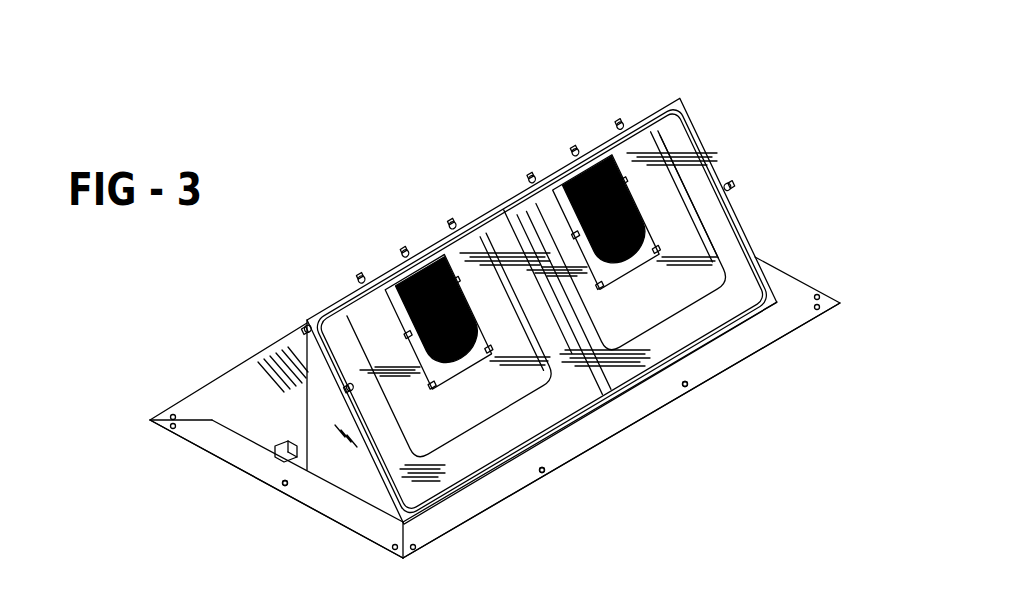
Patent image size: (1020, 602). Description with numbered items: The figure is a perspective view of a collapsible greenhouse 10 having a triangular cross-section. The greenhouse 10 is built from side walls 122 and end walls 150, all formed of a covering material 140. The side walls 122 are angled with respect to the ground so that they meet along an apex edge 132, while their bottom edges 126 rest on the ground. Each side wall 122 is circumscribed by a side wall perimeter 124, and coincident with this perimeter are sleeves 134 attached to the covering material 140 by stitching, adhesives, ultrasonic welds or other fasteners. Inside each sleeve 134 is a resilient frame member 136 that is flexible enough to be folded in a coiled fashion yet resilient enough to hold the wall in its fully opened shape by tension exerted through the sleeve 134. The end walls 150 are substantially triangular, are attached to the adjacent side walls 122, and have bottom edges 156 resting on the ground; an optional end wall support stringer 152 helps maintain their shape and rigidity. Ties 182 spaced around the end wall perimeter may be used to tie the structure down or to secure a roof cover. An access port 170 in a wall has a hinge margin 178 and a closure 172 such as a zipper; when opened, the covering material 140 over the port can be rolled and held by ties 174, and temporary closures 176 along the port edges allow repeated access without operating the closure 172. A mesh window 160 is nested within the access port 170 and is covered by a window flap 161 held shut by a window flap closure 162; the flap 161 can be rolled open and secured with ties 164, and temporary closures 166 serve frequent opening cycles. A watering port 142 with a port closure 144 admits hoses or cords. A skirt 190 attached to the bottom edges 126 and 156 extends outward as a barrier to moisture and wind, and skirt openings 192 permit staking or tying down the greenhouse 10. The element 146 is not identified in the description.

The greenhouse 10 is at (822, 101).
The side walls 122 is at (498, 192).
The side wall perimeters 124 is at (752, 246).
The bottom edges 126 is at (552, 433).
The apex edge 132 is at (603, 140).
The sleeves 134 is at (612, 395).
The resilient frame member 136 is at (647, 375).
The covering material 140 is at (723, 313).
The watering ports 142 is at (290, 460).
The port closures 144 is at (278, 450).
The end wall 146 is at (327, 467).
The end walls 150 is at (724, 172).
The end wall support stringer 152 is at (303, 378).
The bottom edges 156 is at (373, 507).
The mesh windows 160 is at (425, 258).
The window flaps 161 is at (535, 465).
The window flap closures 162 is at (442, 256).
The ties 164 is at (398, 250).
The temporary closures 166 is at (705, 258).
The access ports 170 is at (433, 430).
The closure 172 is at (457, 437).
The ties 174 is at (532, 176).
The temporary closures 176 is at (732, 290).
The hinge margin 178 is at (355, 303).
The ties 182 is at (305, 325).
The skirt 190 is at (205, 400).
The skirt openings 192 is at (840, 302).